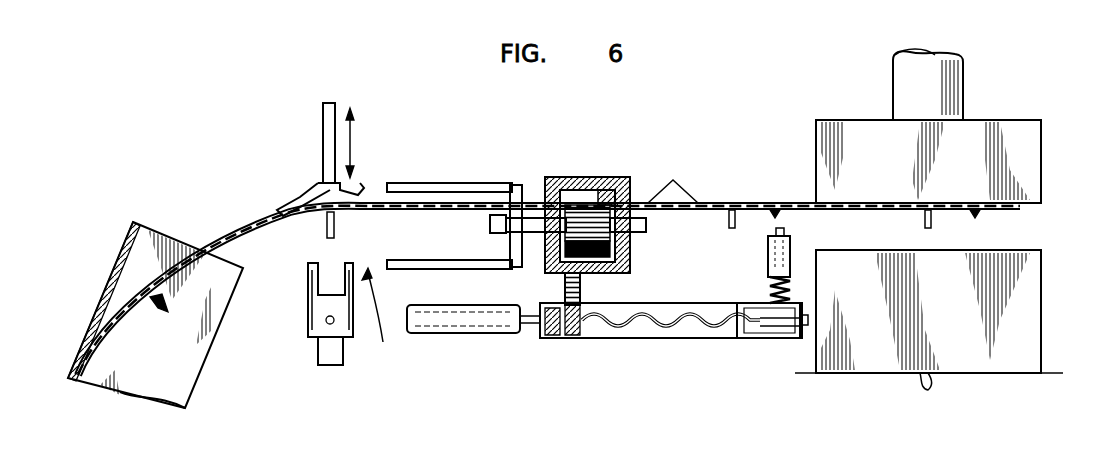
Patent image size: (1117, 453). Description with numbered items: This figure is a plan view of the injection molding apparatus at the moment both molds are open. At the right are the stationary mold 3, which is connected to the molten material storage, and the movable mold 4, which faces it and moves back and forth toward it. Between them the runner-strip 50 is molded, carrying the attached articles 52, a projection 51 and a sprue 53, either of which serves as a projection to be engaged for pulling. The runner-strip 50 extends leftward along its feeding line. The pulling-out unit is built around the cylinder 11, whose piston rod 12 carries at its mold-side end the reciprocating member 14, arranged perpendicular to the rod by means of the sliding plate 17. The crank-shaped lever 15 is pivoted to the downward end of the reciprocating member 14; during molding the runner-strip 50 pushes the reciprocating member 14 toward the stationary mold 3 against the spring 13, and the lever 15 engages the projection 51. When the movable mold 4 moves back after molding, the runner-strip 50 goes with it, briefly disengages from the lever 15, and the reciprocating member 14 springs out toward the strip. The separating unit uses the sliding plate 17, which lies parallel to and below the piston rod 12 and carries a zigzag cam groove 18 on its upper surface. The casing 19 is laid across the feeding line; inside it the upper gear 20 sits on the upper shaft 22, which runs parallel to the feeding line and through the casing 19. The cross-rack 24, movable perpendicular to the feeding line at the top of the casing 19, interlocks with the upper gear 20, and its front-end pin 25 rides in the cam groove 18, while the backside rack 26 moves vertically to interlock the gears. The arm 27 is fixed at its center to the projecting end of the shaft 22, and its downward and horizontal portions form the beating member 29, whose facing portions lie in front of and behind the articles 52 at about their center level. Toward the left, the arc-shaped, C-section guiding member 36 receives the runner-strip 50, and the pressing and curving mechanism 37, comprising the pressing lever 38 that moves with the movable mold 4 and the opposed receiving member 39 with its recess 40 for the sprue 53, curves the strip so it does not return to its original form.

The stationary mold 3 is at (1025, 312).
The movable mold 4 is at (1041, 163).
The cylinder 11 is at (445, 326).
The piston rod 12 is at (762, 340).
The spring 13 is at (770, 290).
The reciprocating member 14 is at (768, 258).
The lever 15 is at (782, 236).
The sliding plate 17 is at (677, 335).
The cam groove 18 is at (633, 323).
The casing 19 is at (630, 262).
The upper gear 20 is at (585, 195).
The upper shaft 22 is at (532, 216).
The cross-rack 24 is at (564, 292).
The pin 25 is at (570, 338).
The backside rack 26 is at (600, 190).
The arm 27 is at (510, 246).
The beating member 29 is at (440, 183).
The guiding member 36 is at (122, 272).
The pressing and curving mechanism 37 is at (382, 317).
The pressing lever 38 is at (300, 200).
The receiving member 39 is at (316, 344).
The recess 40 is at (320, 305).
The runner-strip 50 is at (252, 226).
The projection 51 is at (776, 209).
The articles 52 is at (673, 178).
The sprue 53 is at (729, 222).